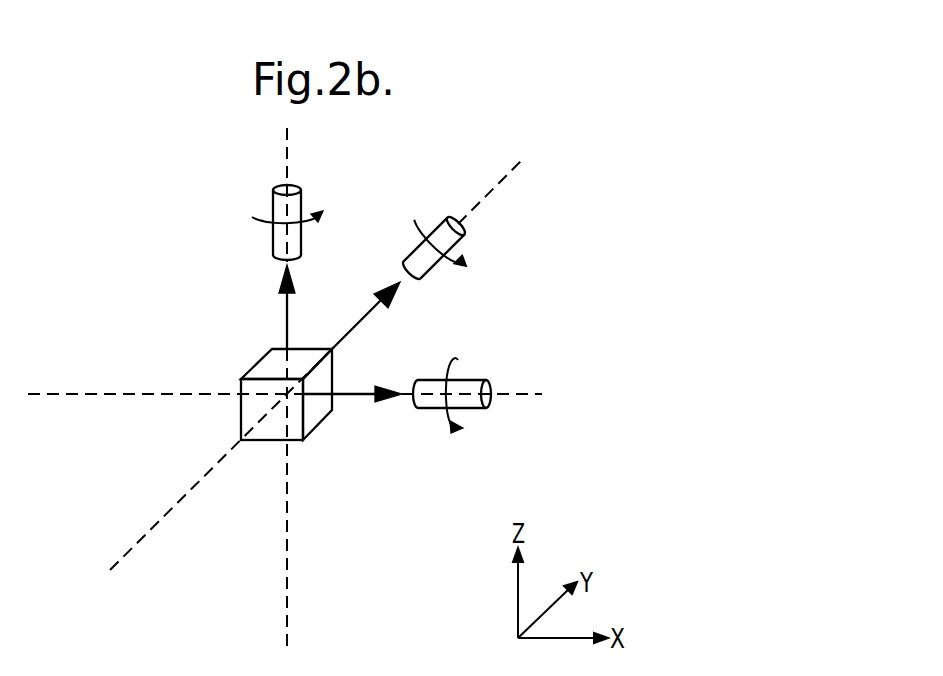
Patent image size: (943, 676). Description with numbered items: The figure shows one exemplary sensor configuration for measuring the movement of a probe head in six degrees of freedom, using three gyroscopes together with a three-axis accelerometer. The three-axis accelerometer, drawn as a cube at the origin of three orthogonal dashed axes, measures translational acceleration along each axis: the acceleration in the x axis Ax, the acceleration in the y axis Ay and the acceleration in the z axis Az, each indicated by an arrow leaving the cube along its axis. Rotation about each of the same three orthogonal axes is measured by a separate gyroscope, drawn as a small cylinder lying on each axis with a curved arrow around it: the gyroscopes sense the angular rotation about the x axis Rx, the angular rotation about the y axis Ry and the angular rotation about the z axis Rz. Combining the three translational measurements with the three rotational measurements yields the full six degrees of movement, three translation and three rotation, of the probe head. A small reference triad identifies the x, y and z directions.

The acceleration in the x axis Ax is at (352, 383).
The acceleration in the y axis Ay is at (366, 315).
The acceleration in the z axis Az is at (275, 307).
The angular rotation about the x axis Rx is at (508, 408).
The angular rotation about the y axis Ry is at (435, 251).
The angular rotation about the z axis Rz is at (295, 222).